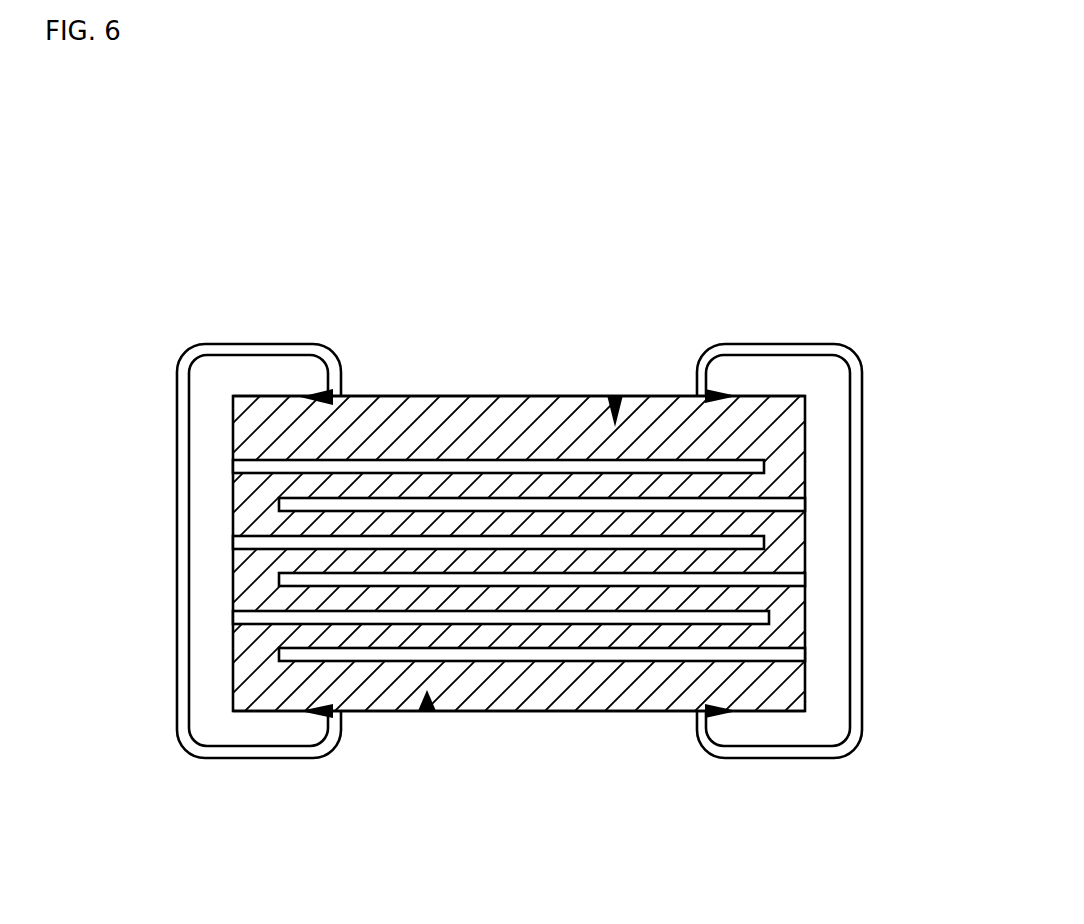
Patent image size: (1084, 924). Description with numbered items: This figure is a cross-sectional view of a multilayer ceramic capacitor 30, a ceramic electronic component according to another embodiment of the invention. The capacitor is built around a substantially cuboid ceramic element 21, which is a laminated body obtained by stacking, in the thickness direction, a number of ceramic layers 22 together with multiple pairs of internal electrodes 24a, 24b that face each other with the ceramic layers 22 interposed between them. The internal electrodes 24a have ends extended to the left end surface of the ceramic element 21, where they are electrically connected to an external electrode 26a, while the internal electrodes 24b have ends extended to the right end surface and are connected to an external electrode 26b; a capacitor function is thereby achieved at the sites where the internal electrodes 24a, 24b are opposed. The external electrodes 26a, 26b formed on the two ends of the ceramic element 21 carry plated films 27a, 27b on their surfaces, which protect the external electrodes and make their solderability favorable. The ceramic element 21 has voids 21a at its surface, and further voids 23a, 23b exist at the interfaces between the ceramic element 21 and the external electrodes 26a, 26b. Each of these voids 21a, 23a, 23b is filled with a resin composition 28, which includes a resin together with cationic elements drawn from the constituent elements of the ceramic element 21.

The multilayer ceramic capacitor 30 is at (207, 250).
The ceramic element 21 is at (445, 413).
The voids 21a is at (603, 412).
The ceramic layers 22 is at (295, 433).
The voids 23a is at (226, 557).
The voids 23b is at (827, 551).
The internal electrodes 24a is at (537, 612).
The internal electrodes 24b is at (550, 511).
The external electrode 26a is at (207, 397).
The external electrode 26b is at (833, 395).
The plated film 27a is at (188, 353).
The plated film 27b is at (851, 350).
The resin composition 28 is at (333, 393).